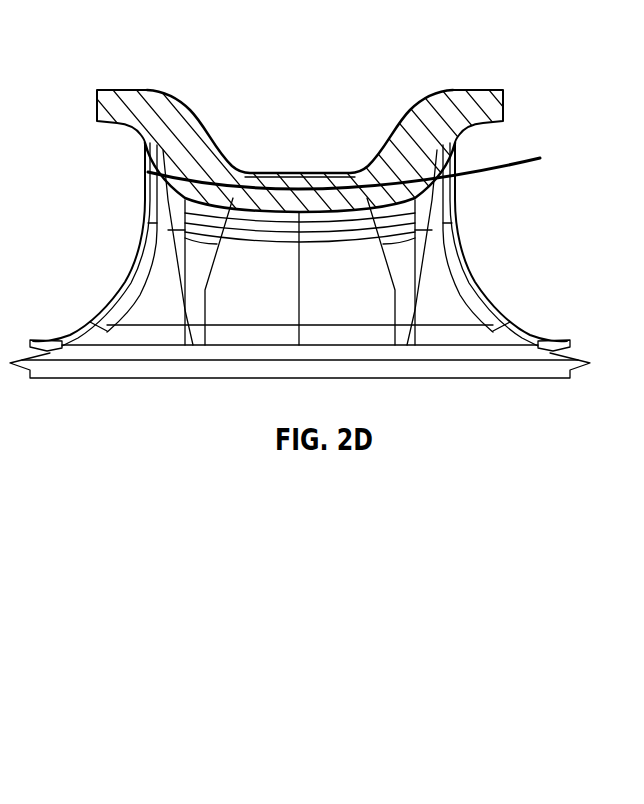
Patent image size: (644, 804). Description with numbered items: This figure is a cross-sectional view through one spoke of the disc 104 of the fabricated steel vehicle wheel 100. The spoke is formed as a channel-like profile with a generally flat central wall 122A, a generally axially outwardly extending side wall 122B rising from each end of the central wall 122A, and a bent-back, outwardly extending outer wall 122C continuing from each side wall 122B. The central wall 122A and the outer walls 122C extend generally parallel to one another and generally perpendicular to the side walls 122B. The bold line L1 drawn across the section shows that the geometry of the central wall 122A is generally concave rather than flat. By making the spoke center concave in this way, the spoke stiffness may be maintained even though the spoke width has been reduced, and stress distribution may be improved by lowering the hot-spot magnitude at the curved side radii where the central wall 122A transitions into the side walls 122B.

The fabricated steel vehicle wheel 100 is at (316, 225).
The disc 104 is at (470, 250).
The central wall 122A is at (308, 199).
The side wall 122B is at (163, 137).
The outer wall 122C is at (110, 102).
The bold line L1 is at (290, 183).